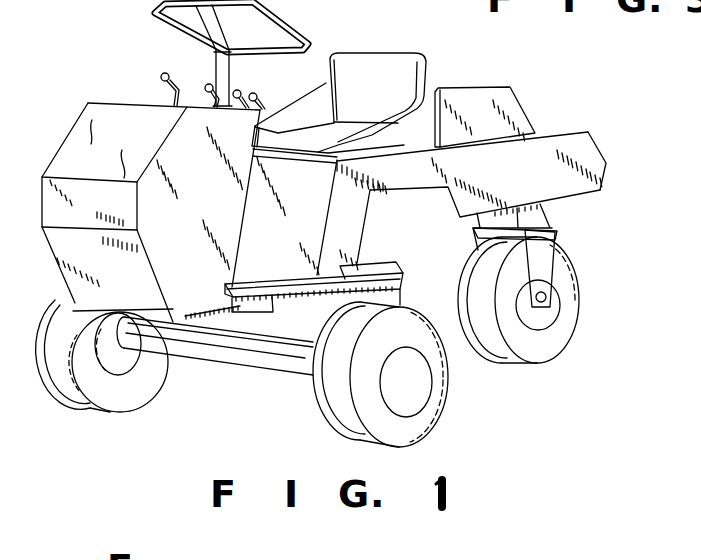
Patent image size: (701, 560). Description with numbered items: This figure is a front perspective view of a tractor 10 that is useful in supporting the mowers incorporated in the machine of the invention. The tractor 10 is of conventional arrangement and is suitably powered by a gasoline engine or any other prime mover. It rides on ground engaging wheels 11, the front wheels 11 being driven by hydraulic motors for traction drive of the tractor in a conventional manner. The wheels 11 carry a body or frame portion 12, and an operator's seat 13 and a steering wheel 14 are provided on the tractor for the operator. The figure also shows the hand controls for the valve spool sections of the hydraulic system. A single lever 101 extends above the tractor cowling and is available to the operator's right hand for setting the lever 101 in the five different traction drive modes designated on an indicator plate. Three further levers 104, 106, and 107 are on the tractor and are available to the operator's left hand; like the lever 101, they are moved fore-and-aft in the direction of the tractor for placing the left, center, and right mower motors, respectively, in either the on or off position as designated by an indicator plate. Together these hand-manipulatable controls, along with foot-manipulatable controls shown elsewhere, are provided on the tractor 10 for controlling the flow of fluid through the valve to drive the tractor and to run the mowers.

The tractor 10 is at (596, 131).
The ground engaging wheels 11 is at (313, 408).
The body or frame portion 12 is at (604, 163).
The operator's seat 13 is at (420, 68).
The steering wheel 14 is at (293, 23).
The single lever 101 is at (163, 80).
The lever 104 is at (257, 97).
The lever 106 is at (238, 91).
The lever 107 is at (207, 83).